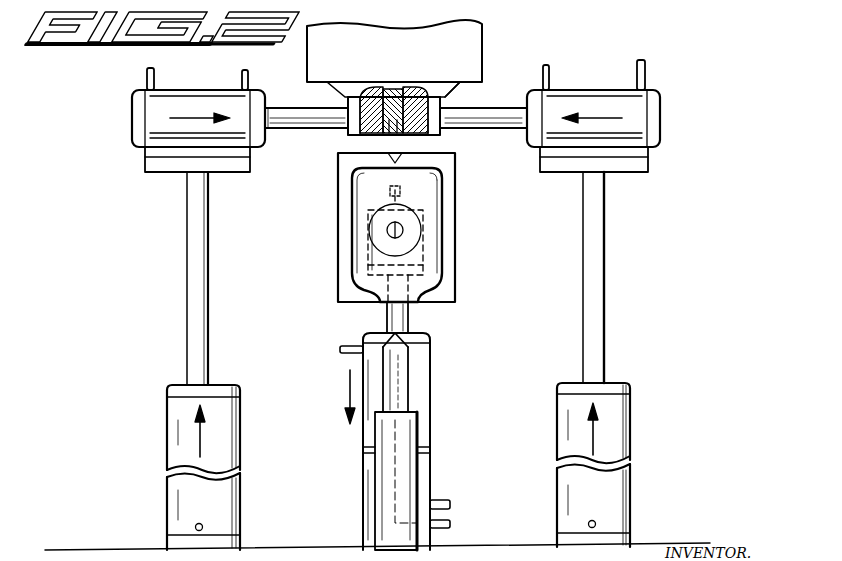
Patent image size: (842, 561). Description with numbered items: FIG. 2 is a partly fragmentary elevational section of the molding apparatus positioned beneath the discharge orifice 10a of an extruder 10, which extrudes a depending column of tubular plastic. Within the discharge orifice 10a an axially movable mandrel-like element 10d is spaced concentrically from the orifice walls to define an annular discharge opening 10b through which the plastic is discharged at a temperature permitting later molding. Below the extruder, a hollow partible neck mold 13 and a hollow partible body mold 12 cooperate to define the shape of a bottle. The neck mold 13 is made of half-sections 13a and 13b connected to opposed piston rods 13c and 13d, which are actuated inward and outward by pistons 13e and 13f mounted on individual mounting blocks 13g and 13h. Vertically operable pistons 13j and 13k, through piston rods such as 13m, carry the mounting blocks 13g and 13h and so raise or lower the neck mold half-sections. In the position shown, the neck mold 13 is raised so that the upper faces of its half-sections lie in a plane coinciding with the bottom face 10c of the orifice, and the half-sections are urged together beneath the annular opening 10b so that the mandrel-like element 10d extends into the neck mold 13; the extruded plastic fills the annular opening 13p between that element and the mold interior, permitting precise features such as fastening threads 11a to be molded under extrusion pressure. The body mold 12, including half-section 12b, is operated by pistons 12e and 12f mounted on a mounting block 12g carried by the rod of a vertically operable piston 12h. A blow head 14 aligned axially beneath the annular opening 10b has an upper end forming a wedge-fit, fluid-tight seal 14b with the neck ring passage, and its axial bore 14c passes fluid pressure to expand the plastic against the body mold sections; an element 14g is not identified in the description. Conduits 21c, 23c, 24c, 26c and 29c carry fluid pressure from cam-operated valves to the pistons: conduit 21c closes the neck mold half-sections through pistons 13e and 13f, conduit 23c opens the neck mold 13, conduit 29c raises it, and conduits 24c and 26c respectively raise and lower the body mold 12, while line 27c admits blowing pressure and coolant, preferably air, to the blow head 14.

The extruder 10 is at (392, 48).
The discharge orifice 10a is at (346, 93).
The annular discharge opening 10b is at (385, 104).
The bottom face of extruder orifice 10c is at (462, 100).
The mandrel-like element 10d is at (397, 136).
The fastening threads 11a is at (357, 132).
The body mold 12 is at (470, 208).
The body mold half-section 12b is at (446, 249).
The piston 12e is at (410, 325).
The piston 12f is at (360, 223).
The mounting block 12g is at (355, 277).
The piston 12h is at (424, 366).
The neck mold 13 is at (462, 106).
The neck mold half-section 13a is at (433, 137).
The neck mold half-section 13b is at (352, 126).
The piston rod 13c is at (483, 120).
The piston rod 13d is at (277, 105).
The piston 13e is at (637, 118).
The piston 13f is at (150, 110).
The mounting block 13g is at (638, 161).
The mounting block 13h is at (150, 164).
The piston 13j is at (618, 427).
The piston 13k is at (178, 434).
The piston rod 13m is at (590, 273).
The annular opening 13p is at (415, 112).
The blow head 14 is at (360, 430).
The wedge-fit seal 14b is at (393, 345).
The axial bore 14c is at (396, 387).
The plunger piston 14g is at (388, 490).
The conduit 21c is at (147, 73).
The conduit 23c is at (242, 75).
The conduit 24c is at (446, 503).
The conduit 26c is at (340, 350).
The line 27c is at (455, 524).
The conduit 29c is at (195, 527).